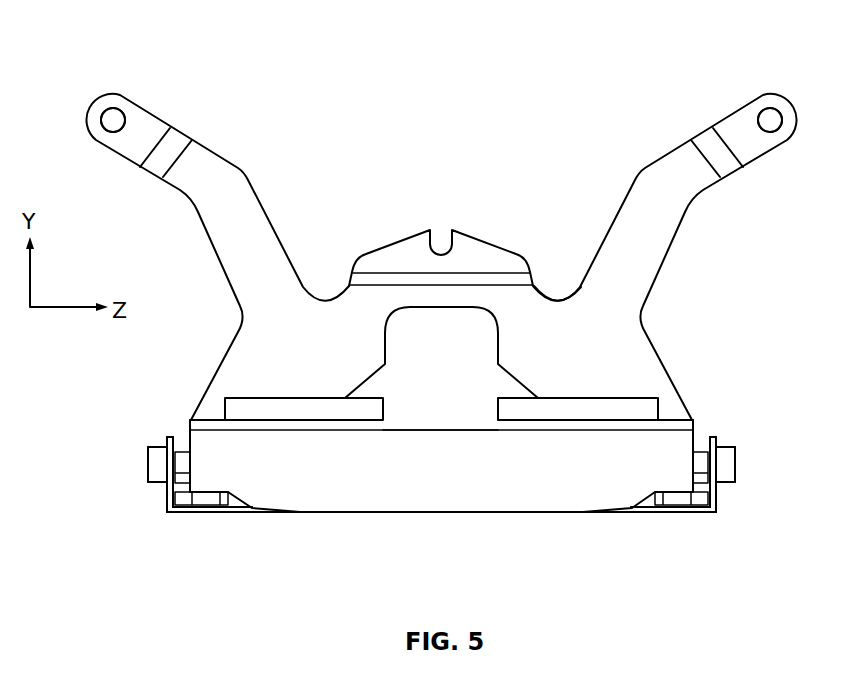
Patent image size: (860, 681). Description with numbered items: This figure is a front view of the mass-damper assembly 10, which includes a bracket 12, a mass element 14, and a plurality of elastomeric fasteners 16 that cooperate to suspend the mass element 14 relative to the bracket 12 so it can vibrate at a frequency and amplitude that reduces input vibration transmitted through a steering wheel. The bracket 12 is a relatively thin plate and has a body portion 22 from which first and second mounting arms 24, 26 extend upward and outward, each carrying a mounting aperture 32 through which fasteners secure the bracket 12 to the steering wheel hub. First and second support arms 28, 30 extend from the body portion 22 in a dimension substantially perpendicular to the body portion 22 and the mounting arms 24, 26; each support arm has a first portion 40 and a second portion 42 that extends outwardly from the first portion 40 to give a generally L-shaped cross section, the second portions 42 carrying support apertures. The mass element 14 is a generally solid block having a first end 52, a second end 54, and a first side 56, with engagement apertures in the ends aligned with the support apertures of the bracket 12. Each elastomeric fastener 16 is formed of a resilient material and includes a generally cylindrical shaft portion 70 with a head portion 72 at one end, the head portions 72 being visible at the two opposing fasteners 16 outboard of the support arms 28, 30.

The mass-damper assembly 10 is at (585, 41).
The bracket 12 is at (497, 236).
The mass element 14 is at (448, 522).
The elastomeric fasteners 16 is at (138, 465).
The body portion 22 is at (309, 378).
The first mounting arm 24 is at (258, 228).
The second mounting arm 26 is at (670, 171).
The first support arm 28 is at (173, 522).
The second support arm 30 is at (714, 522).
The mounting aperture 32 is at (127, 118).
The first portion 40 is at (223, 517).
The second portion 42 is at (165, 505).
The first end 52 is at (188, 485).
The second end 54 is at (700, 429).
The first side 56 is at (429, 429).
The shaft portion 70 is at (187, 450).
The head portion 72 is at (157, 444).